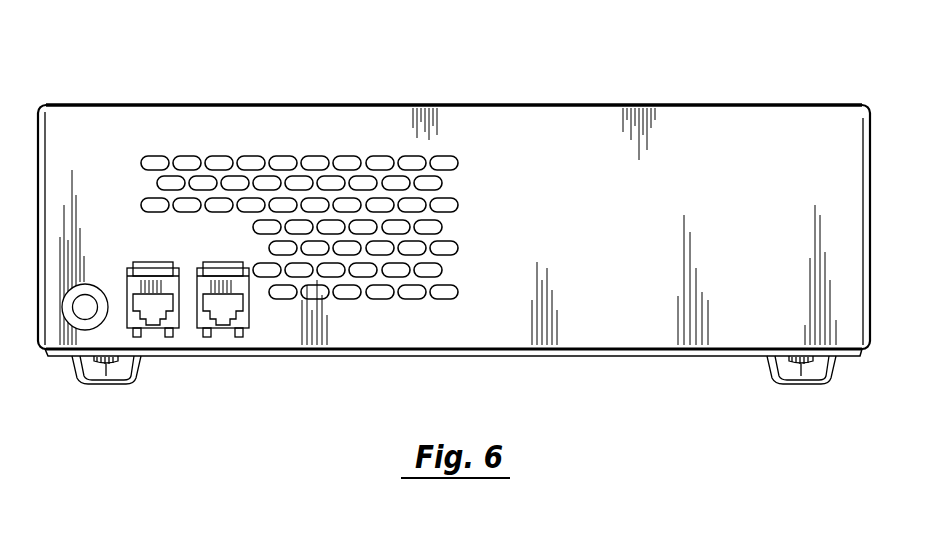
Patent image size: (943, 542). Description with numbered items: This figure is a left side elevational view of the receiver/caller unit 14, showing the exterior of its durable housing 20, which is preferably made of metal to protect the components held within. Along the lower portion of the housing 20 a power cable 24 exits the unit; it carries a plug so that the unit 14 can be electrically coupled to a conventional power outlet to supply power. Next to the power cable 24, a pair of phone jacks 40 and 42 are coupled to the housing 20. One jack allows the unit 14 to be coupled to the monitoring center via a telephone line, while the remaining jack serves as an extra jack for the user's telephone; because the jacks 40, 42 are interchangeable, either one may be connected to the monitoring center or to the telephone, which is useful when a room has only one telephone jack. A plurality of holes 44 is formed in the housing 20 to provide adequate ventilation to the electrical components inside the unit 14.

The receiver/caller unit 14 is at (522, 96).
The housing 20 is at (720, 120).
The power cable 24 is at (97, 284).
The phone jack 40 is at (140, 264).
The phone jack 42 is at (206, 264).
The holes 44 is at (438, 228).